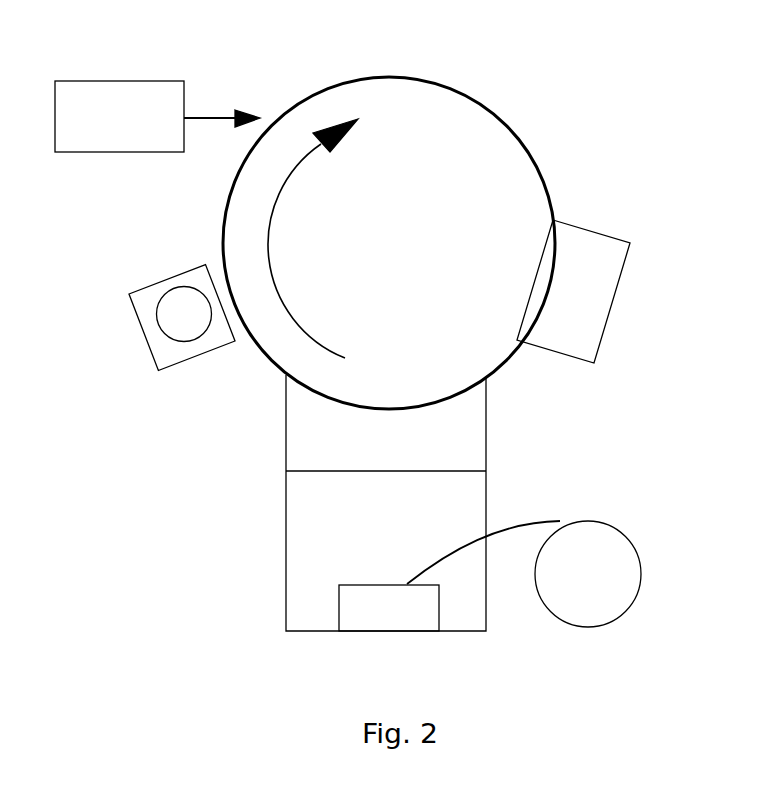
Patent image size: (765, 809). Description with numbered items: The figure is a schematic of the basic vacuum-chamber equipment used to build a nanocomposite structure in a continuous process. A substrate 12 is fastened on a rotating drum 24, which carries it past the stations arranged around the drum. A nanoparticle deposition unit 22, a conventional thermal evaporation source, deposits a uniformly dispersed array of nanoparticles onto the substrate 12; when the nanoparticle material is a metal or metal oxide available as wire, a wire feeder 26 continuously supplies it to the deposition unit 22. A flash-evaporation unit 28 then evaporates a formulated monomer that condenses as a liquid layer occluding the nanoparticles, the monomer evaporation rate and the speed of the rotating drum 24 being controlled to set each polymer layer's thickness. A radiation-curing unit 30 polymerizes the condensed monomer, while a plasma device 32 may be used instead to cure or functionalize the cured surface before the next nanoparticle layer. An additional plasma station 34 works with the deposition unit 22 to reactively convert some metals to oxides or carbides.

The substrate 12 is at (368, 72).
The nanoparticle deposition unit 22 is at (367, 611).
The rotating drum 24 is at (465, 127).
The wire feeder 26 is at (595, 537).
The flash-evaporation unit 28 is at (170, 350).
The radiation-curing unit 30 is at (112, 95).
The plasma device 32 is at (575, 253).
The plasma station 34 is at (302, 429).